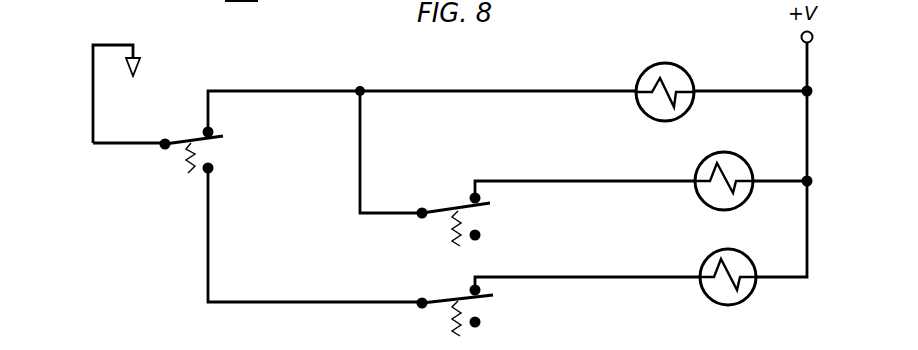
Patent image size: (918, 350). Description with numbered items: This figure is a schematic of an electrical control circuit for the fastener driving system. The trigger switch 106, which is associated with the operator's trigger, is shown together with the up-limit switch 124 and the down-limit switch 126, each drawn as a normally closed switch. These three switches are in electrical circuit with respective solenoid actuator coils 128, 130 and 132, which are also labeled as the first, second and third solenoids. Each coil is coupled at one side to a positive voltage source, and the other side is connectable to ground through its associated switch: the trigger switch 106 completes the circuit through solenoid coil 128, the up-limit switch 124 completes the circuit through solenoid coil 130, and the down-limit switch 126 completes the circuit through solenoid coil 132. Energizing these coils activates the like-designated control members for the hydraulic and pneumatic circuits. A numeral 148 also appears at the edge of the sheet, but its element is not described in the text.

The trigger switch 106 is at (193, 140).
The up-limit switch 124 is at (441, 208).
The down-limit switch 126 is at (441, 298).
The solenoid actuator coil 128 is at (643, 70).
The solenoid actuator coil 130 is at (700, 165).
The solenoid actuator coil 132 is at (705, 259).
The lead wire 148 is at (288, 0).